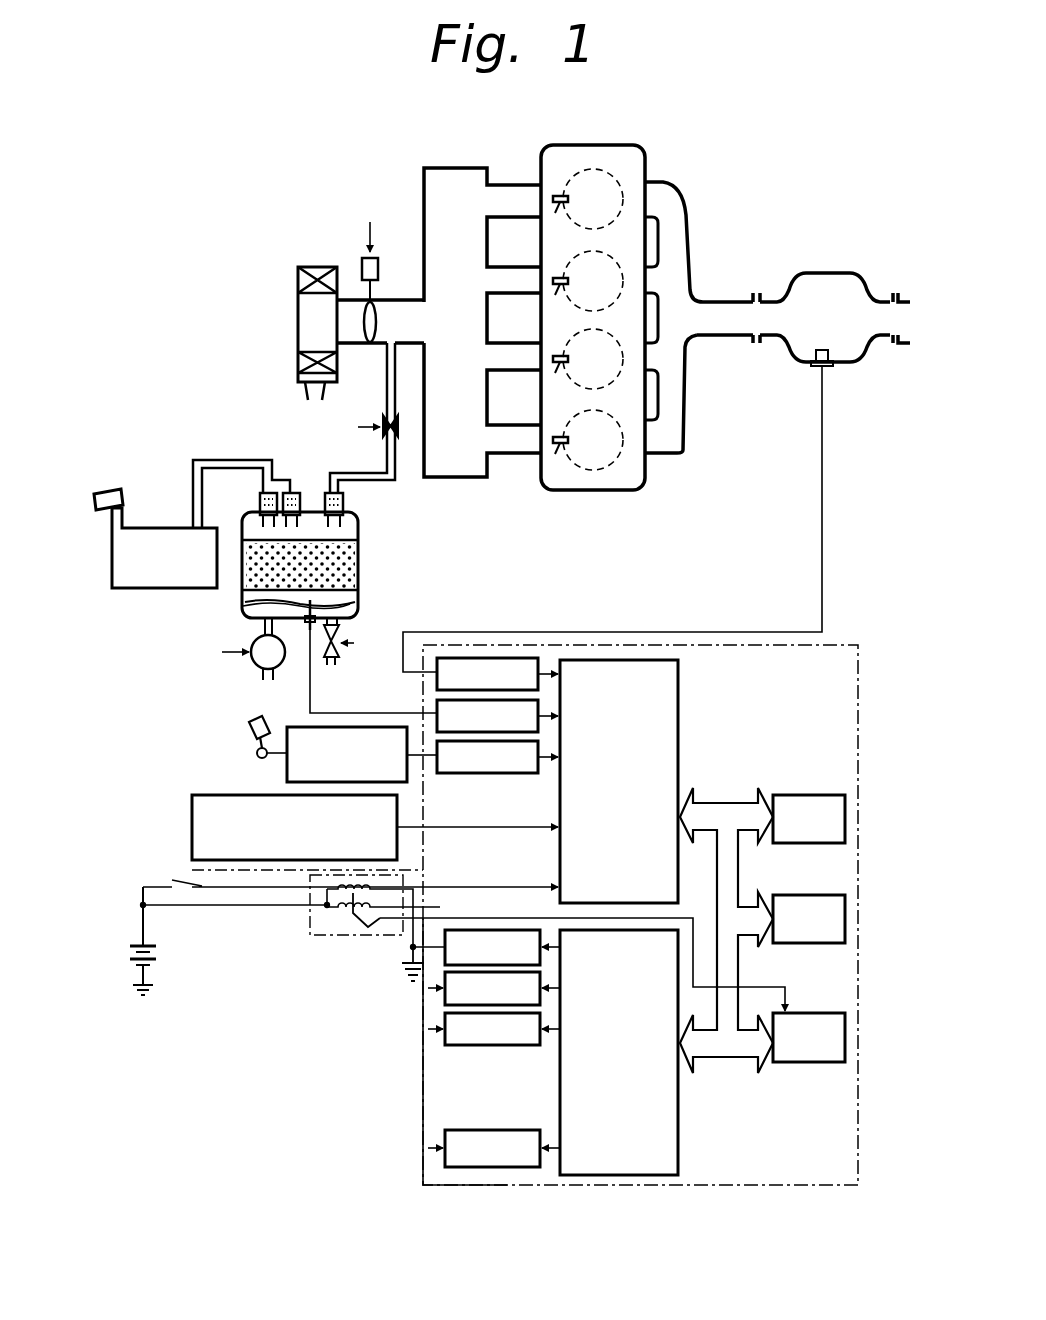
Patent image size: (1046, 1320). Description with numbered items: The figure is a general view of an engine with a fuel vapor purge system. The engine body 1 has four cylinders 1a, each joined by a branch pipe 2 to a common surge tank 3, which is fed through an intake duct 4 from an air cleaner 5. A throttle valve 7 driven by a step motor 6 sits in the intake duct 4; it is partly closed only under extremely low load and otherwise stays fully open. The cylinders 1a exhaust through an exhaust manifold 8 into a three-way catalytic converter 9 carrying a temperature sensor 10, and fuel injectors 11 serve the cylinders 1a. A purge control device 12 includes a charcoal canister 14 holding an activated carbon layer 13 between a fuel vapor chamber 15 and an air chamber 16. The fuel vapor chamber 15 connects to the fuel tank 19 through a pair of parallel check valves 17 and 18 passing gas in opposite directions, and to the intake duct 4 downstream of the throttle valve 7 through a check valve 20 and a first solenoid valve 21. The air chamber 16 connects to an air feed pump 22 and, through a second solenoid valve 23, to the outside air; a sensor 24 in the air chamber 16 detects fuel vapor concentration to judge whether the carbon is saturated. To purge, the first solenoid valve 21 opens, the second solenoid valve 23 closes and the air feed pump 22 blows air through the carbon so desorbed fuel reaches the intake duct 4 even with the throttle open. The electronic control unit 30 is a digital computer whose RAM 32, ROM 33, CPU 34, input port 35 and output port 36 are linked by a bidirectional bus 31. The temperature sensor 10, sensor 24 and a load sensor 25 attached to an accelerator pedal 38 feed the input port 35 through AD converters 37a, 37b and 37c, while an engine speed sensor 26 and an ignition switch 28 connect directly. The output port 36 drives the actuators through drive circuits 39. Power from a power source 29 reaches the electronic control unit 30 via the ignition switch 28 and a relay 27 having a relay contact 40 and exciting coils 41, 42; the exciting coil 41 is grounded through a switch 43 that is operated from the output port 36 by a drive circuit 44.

The engine body 1 is at (654, 163).
The cylinders 1a is at (604, 422).
The branch pipe 2 is at (508, 185).
The surge tank 3 is at (452, 168).
The intake duct 4 is at (405, 300).
The air cleaner 5 is at (298, 313).
The step motor 6 is at (378, 262).
The throttle valve 7 is at (365, 303).
The exhaust manifold 8 is at (685, 210).
The three-way catalytic converter 9 is at (820, 273).
The temperature sensor 10 is at (812, 366).
The fuel injectors 11 is at (558, 435).
The purge control device 12 is at (364, 552).
The activated carbon layer 13 is at (360, 577).
The charcoal canister 14 is at (360, 602).
The fuel vapor chamber 15 is at (356, 520).
The air chamber 16 is at (346, 615).
The check valve 17 is at (293, 493).
The check valve 18 is at (260, 500).
The fuel tank 19 is at (155, 528).
The check valve 20 is at (345, 500).
The first solenoid valve 21 is at (383, 420).
The air feed pump 22 is at (280, 669).
The second solenoid valve 23 is at (339, 656).
The sensor 24 is at (243, 606).
The load sensor 25 is at (283, 732).
The engine speed sensor 26 is at (192, 805).
The relay 27 is at (368, 930).
The ignition switch 28 is at (178, 880).
The power source 29 is at (157, 952).
The electronic control unit 30 is at (860, 772).
The bidirectional bus 31 is at (725, 803).
The RAM 32 is at (805, 795).
The ROM 33 is at (812, 895).
The CPU 34 is at (812, 1013).
The input port 35 is at (680, 716).
The output port 36 is at (680, 1108).
The AD converter 37a is at (472, 658).
The AD converter 37b is at (437, 713).
The AD converter 37c is at (497, 773).
The accelerator pedal 38 is at (247, 750).
The drive circuits 39 is at (443, 998).
The relay contact 40 is at (364, 935).
The exciting coil 41 is at (333, 910).
The exciting coil 42 is at (327, 890).
The switch 43 is at (410, 968).
The drive circuit 44 is at (505, 930).